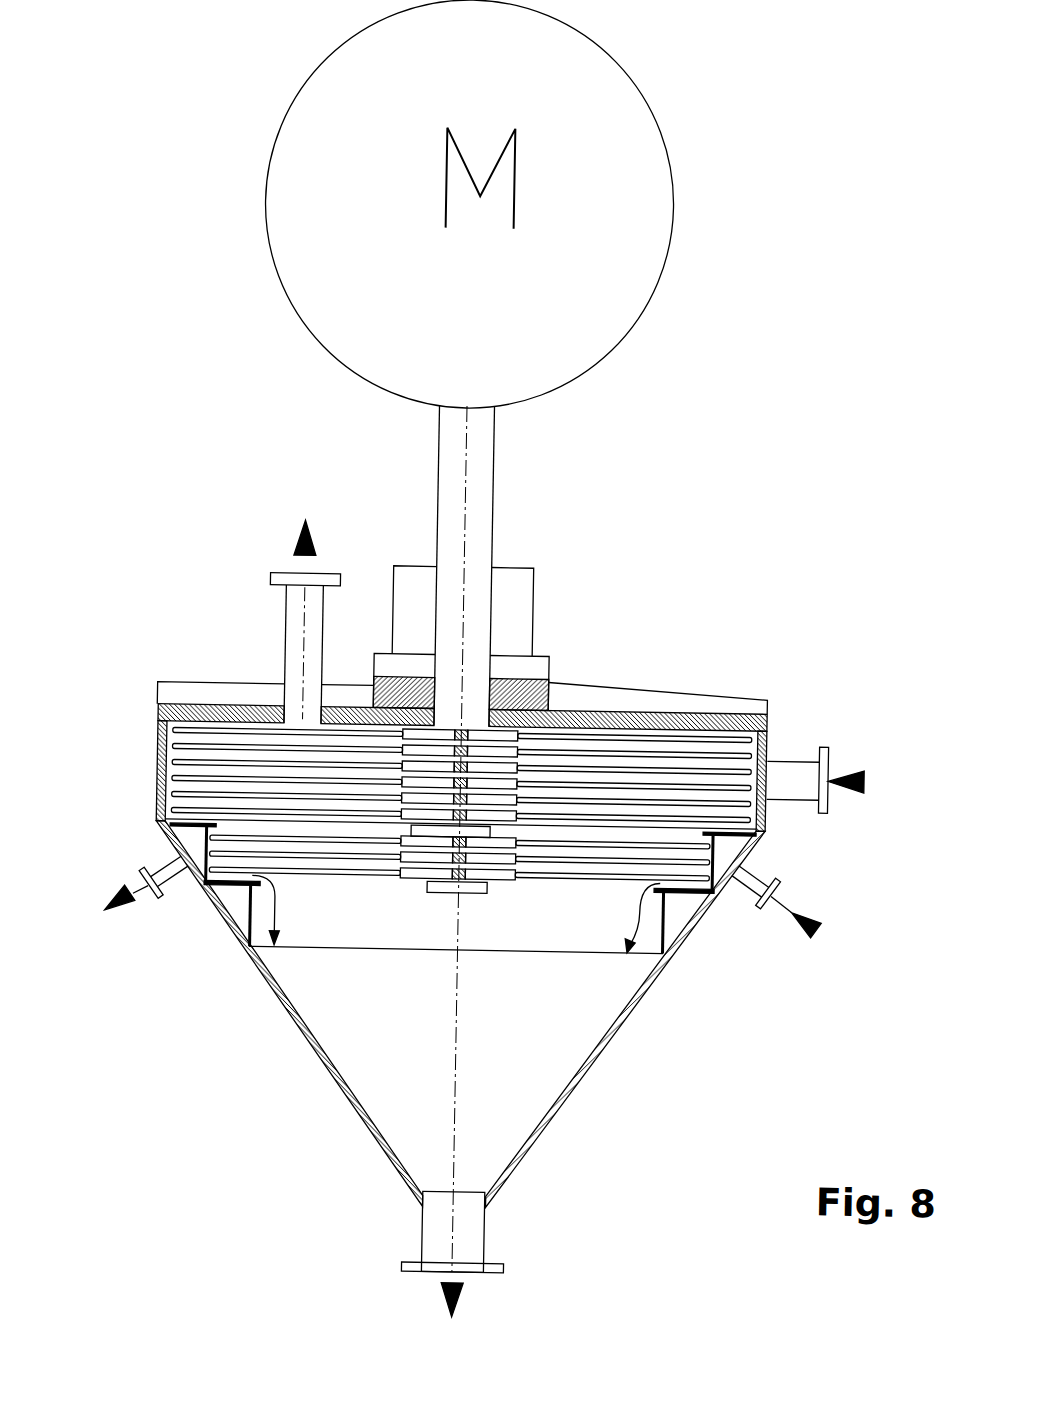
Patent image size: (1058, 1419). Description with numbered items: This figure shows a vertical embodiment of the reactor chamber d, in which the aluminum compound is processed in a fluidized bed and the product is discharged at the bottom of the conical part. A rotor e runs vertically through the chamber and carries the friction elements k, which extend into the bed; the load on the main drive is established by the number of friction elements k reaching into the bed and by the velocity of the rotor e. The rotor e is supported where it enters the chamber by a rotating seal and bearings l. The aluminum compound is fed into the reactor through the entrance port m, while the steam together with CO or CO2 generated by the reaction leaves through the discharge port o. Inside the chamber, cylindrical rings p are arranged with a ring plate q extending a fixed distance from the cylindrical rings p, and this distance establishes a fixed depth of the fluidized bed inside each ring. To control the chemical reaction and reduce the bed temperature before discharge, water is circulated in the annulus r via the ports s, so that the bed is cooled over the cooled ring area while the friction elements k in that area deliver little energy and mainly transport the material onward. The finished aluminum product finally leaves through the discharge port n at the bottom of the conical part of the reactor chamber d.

The rotor e is at (489, 507).
The rotating seal and bearings l is at (531, 591).
The discharge port for the steam and CO2 or CO o is at (329, 575).
The friction elements k is at (745, 735).
The ring plate q is at (160, 849).
The cylindrical rings p is at (259, 917).
The annulus r is at (745, 845).
The entrance port for the material m is at (825, 808).
The reactor chamber d is at (296, 1023).
The ports s is at (463, 898).
The discharge port for the aluminum n is at (502, 1276).